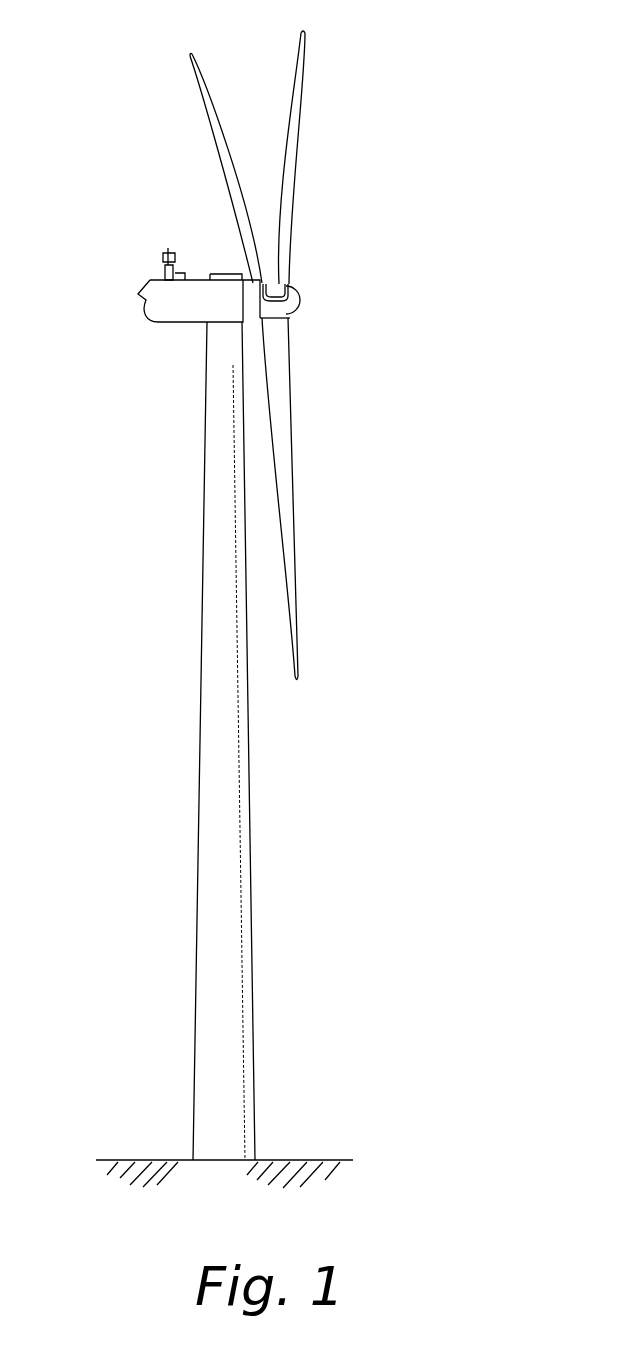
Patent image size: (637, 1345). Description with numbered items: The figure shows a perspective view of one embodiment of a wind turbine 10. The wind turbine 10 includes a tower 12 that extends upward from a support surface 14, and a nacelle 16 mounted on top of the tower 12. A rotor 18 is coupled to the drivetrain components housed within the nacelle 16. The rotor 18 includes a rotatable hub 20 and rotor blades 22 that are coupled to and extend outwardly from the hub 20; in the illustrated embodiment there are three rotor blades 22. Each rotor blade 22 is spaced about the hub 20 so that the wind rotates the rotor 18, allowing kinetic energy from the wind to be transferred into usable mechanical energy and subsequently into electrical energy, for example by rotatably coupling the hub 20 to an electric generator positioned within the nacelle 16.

The wind turbine 10 is at (421, 150).
The tower 12 is at (207, 748).
The support surface 14 is at (118, 1160).
The nacelle 16 is at (172, 323).
The rotor 18 is at (305, 276).
The rotatable hub 20 is at (300, 304).
The rotor blade 22 is at (223, 126).